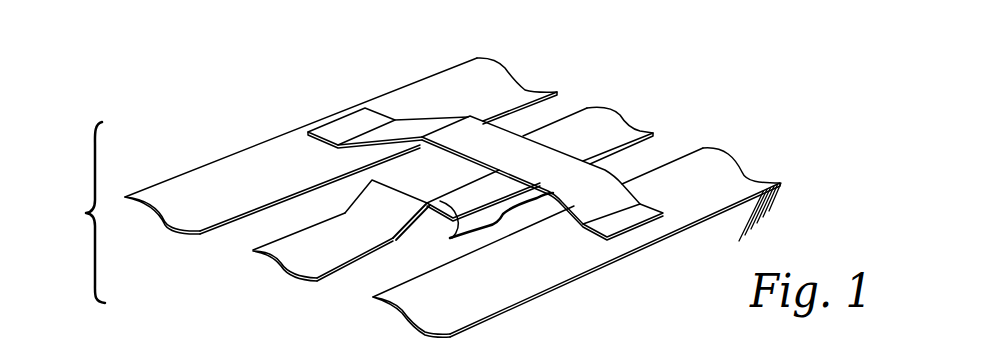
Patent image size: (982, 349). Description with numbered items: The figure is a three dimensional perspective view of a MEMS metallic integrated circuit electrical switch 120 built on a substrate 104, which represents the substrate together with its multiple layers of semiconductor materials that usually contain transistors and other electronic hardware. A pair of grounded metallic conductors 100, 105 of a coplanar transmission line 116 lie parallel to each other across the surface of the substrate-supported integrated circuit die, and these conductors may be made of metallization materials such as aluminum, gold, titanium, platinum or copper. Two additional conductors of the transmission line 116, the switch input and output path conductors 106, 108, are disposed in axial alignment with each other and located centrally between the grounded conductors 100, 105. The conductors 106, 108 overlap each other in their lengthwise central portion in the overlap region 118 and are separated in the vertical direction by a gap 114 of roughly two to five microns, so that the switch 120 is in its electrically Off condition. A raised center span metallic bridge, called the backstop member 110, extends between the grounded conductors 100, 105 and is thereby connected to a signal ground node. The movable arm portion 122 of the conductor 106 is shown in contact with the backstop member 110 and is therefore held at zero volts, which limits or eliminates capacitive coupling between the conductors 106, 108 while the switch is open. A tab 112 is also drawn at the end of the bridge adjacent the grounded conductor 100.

The grounded metallic conductor 100 is at (517, 72).
The substrate 104 is at (780, 203).
The grounded metallic conductor 105 is at (738, 150).
The switch path conductor 106 is at (282, 268).
The switch path conductor 108 is at (620, 116).
The backstop member 110 is at (617, 180).
The tab 112 is at (453, 169).
The gap 114 is at (483, 175).
The transmission line 116 is at (74, 212).
The overlap region 118 is at (483, 213).
The switch 120 is at (251, 80).
The movable arm portion 122 is at (433, 222).